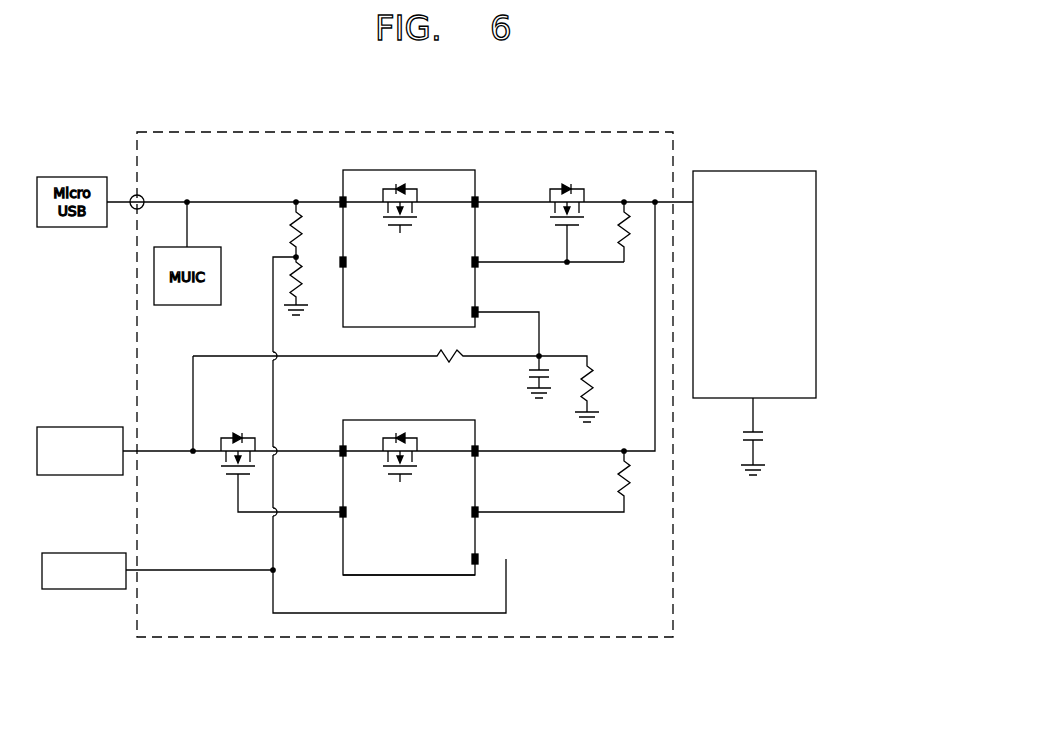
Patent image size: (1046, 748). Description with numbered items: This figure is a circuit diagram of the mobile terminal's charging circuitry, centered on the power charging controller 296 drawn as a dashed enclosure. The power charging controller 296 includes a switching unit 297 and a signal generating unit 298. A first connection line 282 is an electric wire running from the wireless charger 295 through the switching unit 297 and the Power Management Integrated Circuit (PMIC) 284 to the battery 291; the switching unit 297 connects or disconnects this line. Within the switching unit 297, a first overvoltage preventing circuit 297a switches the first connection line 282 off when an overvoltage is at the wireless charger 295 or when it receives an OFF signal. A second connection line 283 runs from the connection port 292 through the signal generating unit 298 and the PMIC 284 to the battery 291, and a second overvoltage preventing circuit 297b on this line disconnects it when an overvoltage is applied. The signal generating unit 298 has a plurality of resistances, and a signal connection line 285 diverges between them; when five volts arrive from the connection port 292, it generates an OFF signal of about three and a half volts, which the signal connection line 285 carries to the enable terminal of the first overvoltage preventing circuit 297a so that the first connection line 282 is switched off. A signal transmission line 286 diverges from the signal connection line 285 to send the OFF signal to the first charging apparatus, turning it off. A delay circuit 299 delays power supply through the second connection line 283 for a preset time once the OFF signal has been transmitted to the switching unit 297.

The first connection line 282 is at (577, 453).
The second connection line 283 is at (508, 198).
The Power Management Integrated Circuit (PMIC) 284 is at (753, 171).
The signal connection line 285 is at (272, 272).
The signal transmission line 286 is at (197, 572).
The battery 291 is at (745, 442).
The connection port 292 is at (135, 196).
The wireless charger 295 is at (75, 427).
The power charging controller 296 is at (674, 580).
The switching unit 297 is at (363, 579).
The first overvoltage preventing circuit 297a is at (407, 575).
The second overvoltage preventing circuit 297b is at (422, 170).
The signal generating unit 298 is at (306, 222).
The delay circuit 299 is at (583, 341).